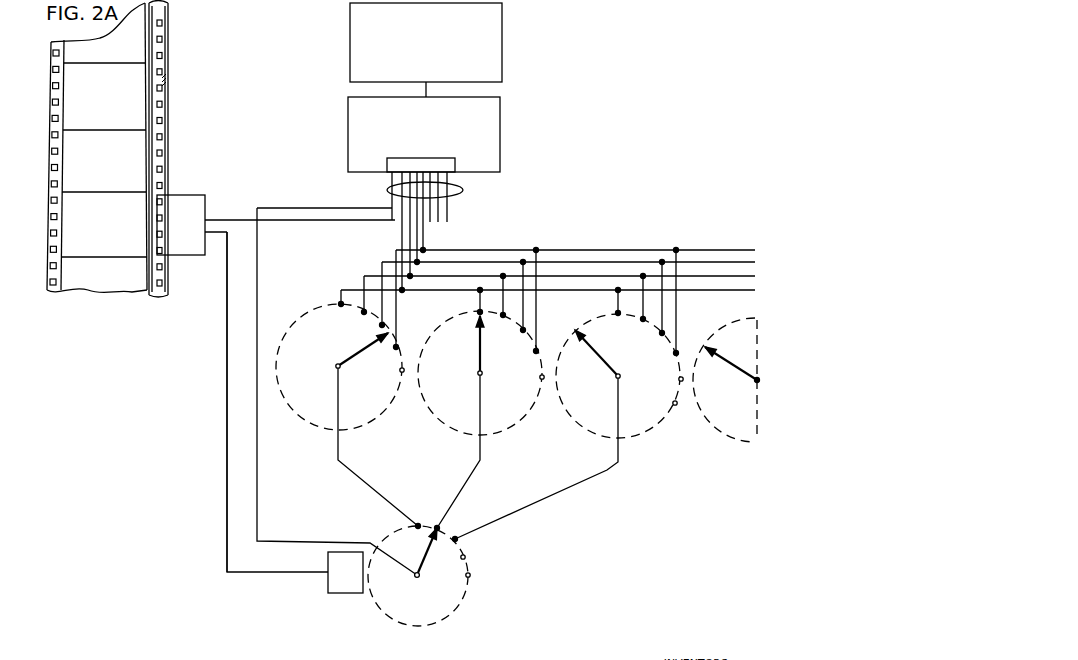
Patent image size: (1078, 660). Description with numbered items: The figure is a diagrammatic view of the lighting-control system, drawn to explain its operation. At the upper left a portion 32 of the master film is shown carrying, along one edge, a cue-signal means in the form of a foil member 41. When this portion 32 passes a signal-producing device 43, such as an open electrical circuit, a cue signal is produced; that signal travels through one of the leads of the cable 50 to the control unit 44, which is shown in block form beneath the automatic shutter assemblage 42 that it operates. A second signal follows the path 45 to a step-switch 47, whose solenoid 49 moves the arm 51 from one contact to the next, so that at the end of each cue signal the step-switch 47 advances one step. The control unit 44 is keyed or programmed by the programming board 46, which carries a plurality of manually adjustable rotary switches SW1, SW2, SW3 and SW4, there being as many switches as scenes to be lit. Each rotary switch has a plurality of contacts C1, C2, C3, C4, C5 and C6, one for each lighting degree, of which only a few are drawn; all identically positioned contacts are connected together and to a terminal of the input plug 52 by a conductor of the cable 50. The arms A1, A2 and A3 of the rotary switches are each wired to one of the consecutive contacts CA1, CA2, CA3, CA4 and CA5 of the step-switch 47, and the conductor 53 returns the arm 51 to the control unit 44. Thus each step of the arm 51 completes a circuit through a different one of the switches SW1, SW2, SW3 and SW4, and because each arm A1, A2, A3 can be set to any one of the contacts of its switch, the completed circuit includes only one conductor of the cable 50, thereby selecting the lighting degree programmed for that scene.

The portion of the master film 32 is at (48, 146).
The foil member 41 is at (170, 81).
The automatic shutter assemblage 42 is at (504, 46).
The signal-producing device 43 is at (193, 200).
The control unit 44 is at (503, 138).
The signal path 45 is at (273, 572).
The programming board 46 is at (237, 492).
The step-switch 47 is at (409, 615).
The solenoid 49 is at (348, 586).
The cable 50 is at (462, 186).
The arm of the step-switch 51 is at (433, 560).
The input plug 52 is at (455, 165).
The return conductor 53 is at (257, 517).
The rotary switch SW1 is at (320, 417).
The rotary switch SW2 is at (457, 422).
The rotary switch SW3 is at (593, 418).
The rotary switch SW4 is at (735, 423).
The switch arm A1 is at (350, 370).
The switch arm A2 is at (480, 349).
The switch arm A3 is at (601, 351).
The contact C1 is at (341, 306).
The contact C2 is at (364, 313).
The contact C3 is at (382, 326).
The contact C4 is at (396, 348).
The contact C5 is at (400, 371).
The contact C6 is at (675, 406).
The step-switch contact CA1 is at (417, 528).
The step-switch contact CA2 is at (442, 528).
The step-switch contact CA3 is at (458, 539).
The step-switch contact CA4 is at (465, 558).
The step-switch contact CA5 is at (469, 577).